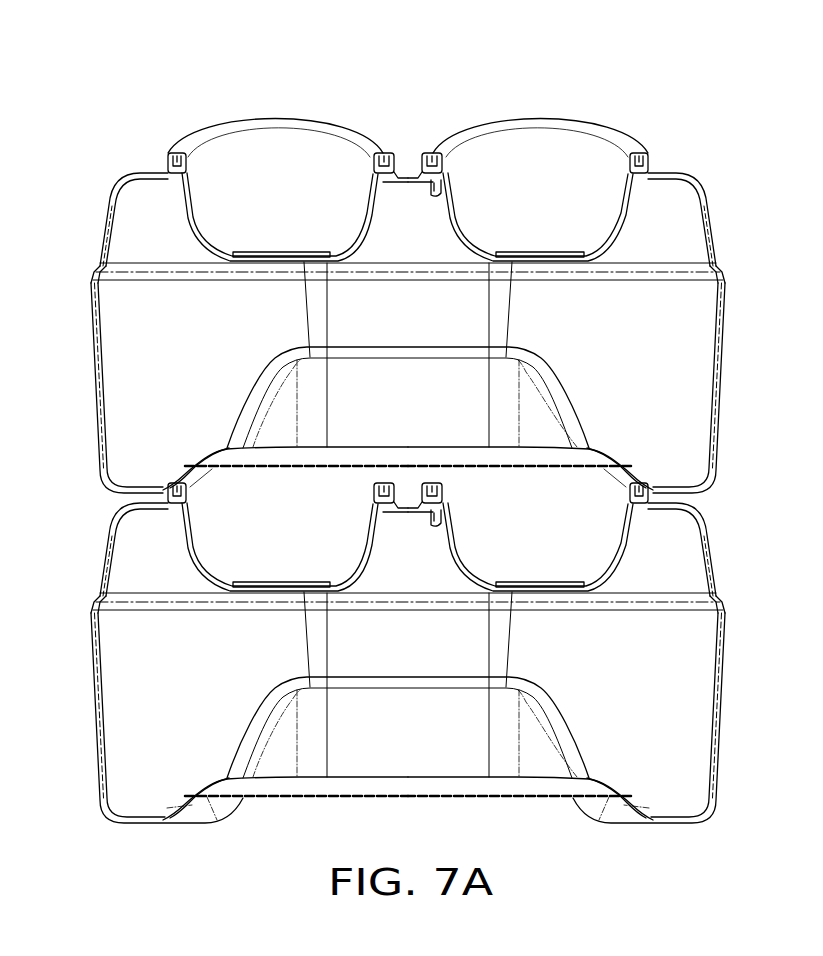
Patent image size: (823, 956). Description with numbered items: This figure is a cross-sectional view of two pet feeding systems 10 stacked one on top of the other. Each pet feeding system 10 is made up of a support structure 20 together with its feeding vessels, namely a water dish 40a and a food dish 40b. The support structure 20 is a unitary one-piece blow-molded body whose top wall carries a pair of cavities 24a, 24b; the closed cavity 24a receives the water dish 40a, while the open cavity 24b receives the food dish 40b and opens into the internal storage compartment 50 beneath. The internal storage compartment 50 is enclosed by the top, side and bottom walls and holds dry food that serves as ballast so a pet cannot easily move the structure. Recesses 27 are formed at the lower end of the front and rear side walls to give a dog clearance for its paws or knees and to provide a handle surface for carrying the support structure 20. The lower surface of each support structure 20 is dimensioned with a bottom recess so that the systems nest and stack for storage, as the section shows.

The pet feeding system 10 is at (455, 443).
The support structure 20 is at (455, 377).
The cavity 24a is at (193, 235).
The cavity 24b is at (623, 228).
The recess 27 is at (419, 414).
The water dish 40a is at (218, 122).
The food dish 40b is at (570, 118).
The internal storage compartment 50 is at (419, 326).